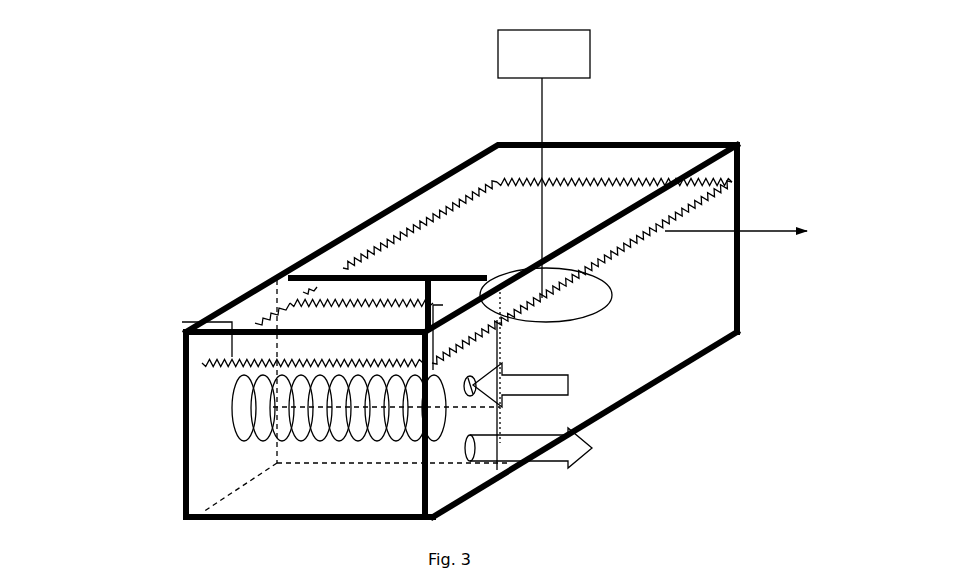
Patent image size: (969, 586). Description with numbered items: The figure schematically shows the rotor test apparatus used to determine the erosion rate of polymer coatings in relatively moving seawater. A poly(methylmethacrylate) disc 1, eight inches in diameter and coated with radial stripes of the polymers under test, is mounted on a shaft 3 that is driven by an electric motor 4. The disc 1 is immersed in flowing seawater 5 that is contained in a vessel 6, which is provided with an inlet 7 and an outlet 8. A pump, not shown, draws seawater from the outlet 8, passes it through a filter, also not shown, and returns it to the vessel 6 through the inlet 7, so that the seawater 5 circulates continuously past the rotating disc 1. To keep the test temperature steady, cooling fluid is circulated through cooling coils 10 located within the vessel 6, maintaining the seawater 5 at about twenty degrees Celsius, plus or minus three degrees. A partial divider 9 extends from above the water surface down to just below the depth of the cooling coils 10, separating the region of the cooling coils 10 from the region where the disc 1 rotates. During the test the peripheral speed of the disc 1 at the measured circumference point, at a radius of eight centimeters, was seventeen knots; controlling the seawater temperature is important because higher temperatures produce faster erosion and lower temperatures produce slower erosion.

The disc 1 is at (605, 297).
The shaft 3 is at (542, 105).
The electric motor 4 is at (590, 57).
The seawater 5 is at (697, 264).
The vessel 6 is at (740, 312).
The inlet 7 is at (572, 390).
The outlet 8 is at (592, 437).
The partial divider 9 is at (308, 278).
The cooling coils 10 is at (237, 433).